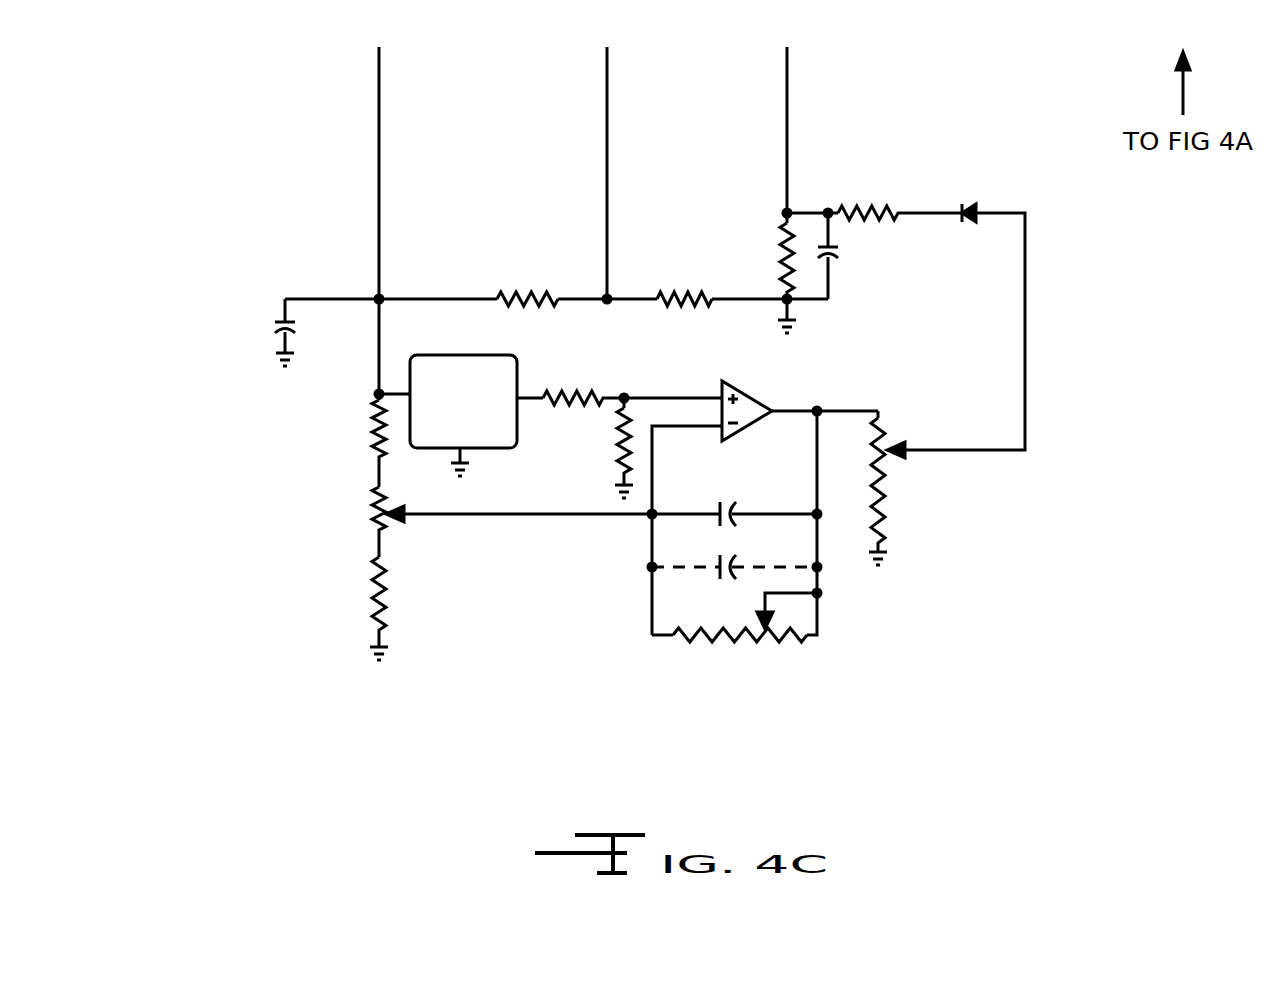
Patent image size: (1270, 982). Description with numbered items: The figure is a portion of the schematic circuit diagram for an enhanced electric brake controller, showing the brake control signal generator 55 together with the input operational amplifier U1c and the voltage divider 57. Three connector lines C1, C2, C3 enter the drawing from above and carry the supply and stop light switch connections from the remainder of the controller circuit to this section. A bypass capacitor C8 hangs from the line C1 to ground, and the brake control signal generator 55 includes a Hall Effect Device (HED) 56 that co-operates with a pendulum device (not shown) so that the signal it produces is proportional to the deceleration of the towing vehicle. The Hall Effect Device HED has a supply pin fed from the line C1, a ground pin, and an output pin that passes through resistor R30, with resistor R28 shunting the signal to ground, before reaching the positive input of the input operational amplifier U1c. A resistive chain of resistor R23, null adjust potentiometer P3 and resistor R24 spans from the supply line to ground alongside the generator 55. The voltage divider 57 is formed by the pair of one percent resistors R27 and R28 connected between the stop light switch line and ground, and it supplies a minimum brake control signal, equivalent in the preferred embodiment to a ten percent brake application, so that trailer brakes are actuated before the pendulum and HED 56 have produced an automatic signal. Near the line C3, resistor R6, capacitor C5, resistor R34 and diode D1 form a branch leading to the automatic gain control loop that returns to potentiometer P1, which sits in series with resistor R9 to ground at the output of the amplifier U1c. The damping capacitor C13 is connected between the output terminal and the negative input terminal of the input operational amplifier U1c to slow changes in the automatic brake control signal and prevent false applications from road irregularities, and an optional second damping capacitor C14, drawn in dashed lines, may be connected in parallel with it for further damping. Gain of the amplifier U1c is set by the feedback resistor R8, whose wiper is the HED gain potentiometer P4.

The connector line C1 is at (353, 220).
The connector line C2 is at (581, 173).
The connector line C3 is at (764, 135).
The capacitor C8 is at (257, 332).
The capacitor C5 is at (833, 254).
The damping capacitor C13 is at (734, 503).
The second damping capacitor C14 is at (734, 556).
The resistor R27 is at (527, 279).
The resistor R28 is at (637, 378).
The resistor R6 is at (764, 278).
The resistor R34 is at (900, 194).
The resistor R30 is at (632, 413).
The resistor R23 is at (347, 440).
The resistor R24 is at (348, 608).
The resistor R8 is at (734, 526).
The resistor R9 is at (897, 488).
The diode D1 is at (962, 309).
The input operational amplifier U1c is at (765, 493).
The potentiometer P1 automatic gain control P1 is at (936, 412).
The potentiometer P3 null adjust P3 is at (512, 533).
The potentiometer P4 HED gain P4 is at (859, 633).
The Hall Effect Device HED is at (440, 403).
The brake control signal generator 55 is at (312, 496).
The Hall Effect Device 56 is at (528, 355).
The voltage divider 57 is at (485, 220).